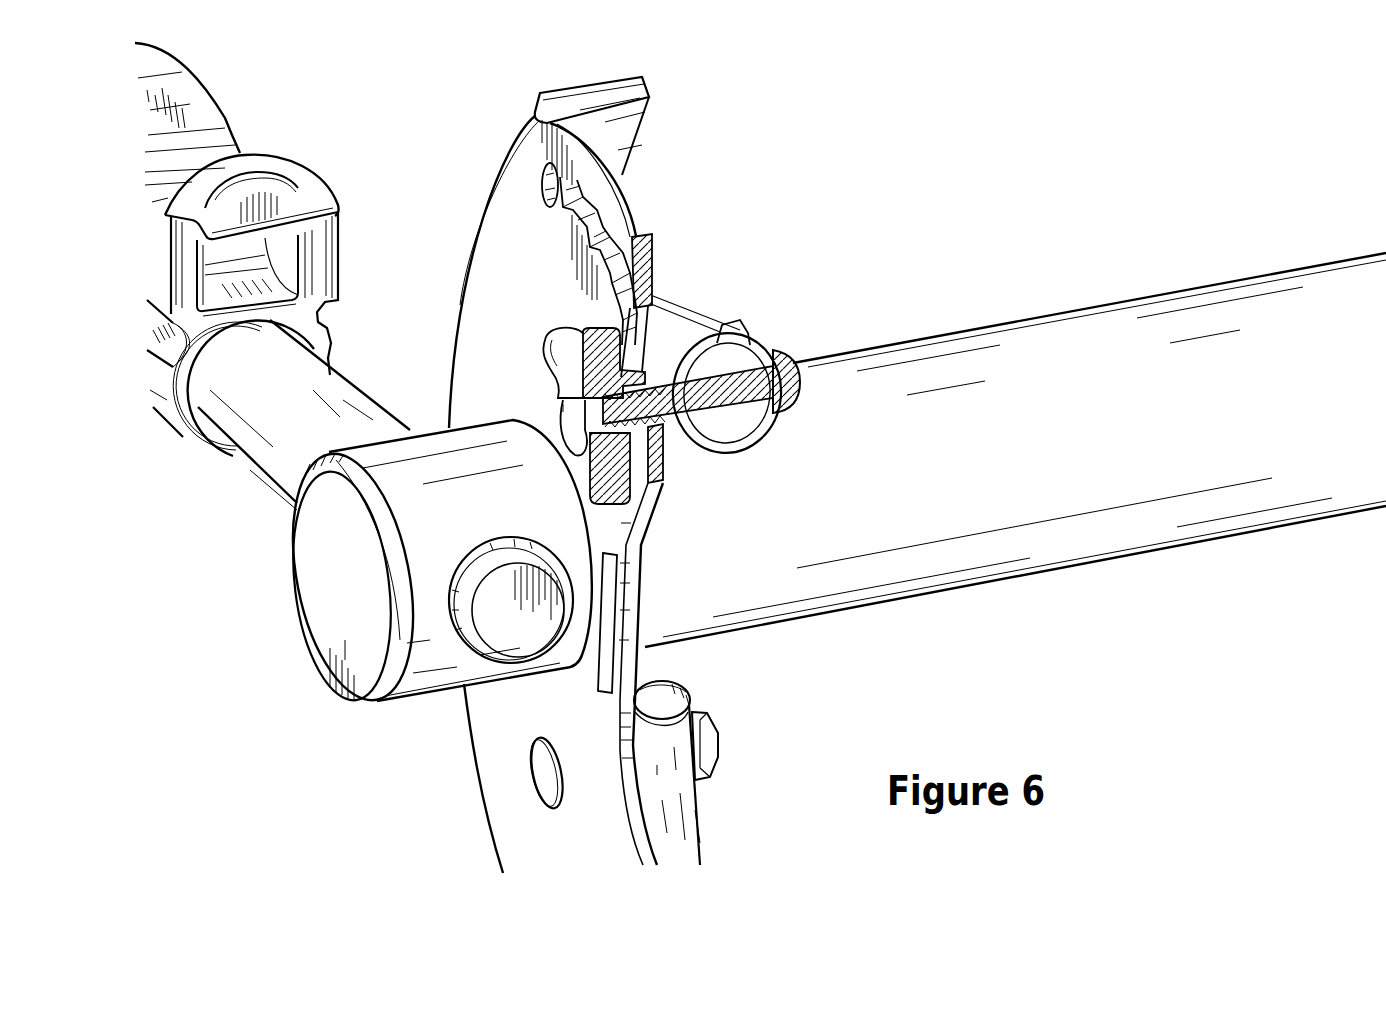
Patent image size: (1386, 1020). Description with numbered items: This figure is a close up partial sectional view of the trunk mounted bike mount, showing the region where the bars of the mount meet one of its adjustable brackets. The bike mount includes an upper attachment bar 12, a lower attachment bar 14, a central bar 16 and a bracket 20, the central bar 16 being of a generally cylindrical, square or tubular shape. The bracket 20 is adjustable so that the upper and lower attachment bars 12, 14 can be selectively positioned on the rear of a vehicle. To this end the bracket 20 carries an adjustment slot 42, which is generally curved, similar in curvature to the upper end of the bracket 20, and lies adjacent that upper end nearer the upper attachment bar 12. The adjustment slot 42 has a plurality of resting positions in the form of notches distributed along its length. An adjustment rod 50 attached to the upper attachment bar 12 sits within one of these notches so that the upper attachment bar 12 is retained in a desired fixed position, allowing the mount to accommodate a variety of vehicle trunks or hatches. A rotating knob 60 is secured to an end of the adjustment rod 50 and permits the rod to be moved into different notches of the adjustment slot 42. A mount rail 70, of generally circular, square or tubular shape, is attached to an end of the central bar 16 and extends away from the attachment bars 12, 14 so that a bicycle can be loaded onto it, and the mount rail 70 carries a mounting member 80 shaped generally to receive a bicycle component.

The upper attachment bar 12 is at (667, 343).
The lower attachment bar 14 is at (653, 812).
The central bar 16 is at (957, 428).
The bracket 20 is at (497, 280).
The adjustment slot 42 is at (570, 184).
The adjustment rod 50 is at (735, 388).
The rotating knob 60 is at (610, 480).
The mount rail 70 is at (322, 424).
The mounting member 80 is at (280, 203).